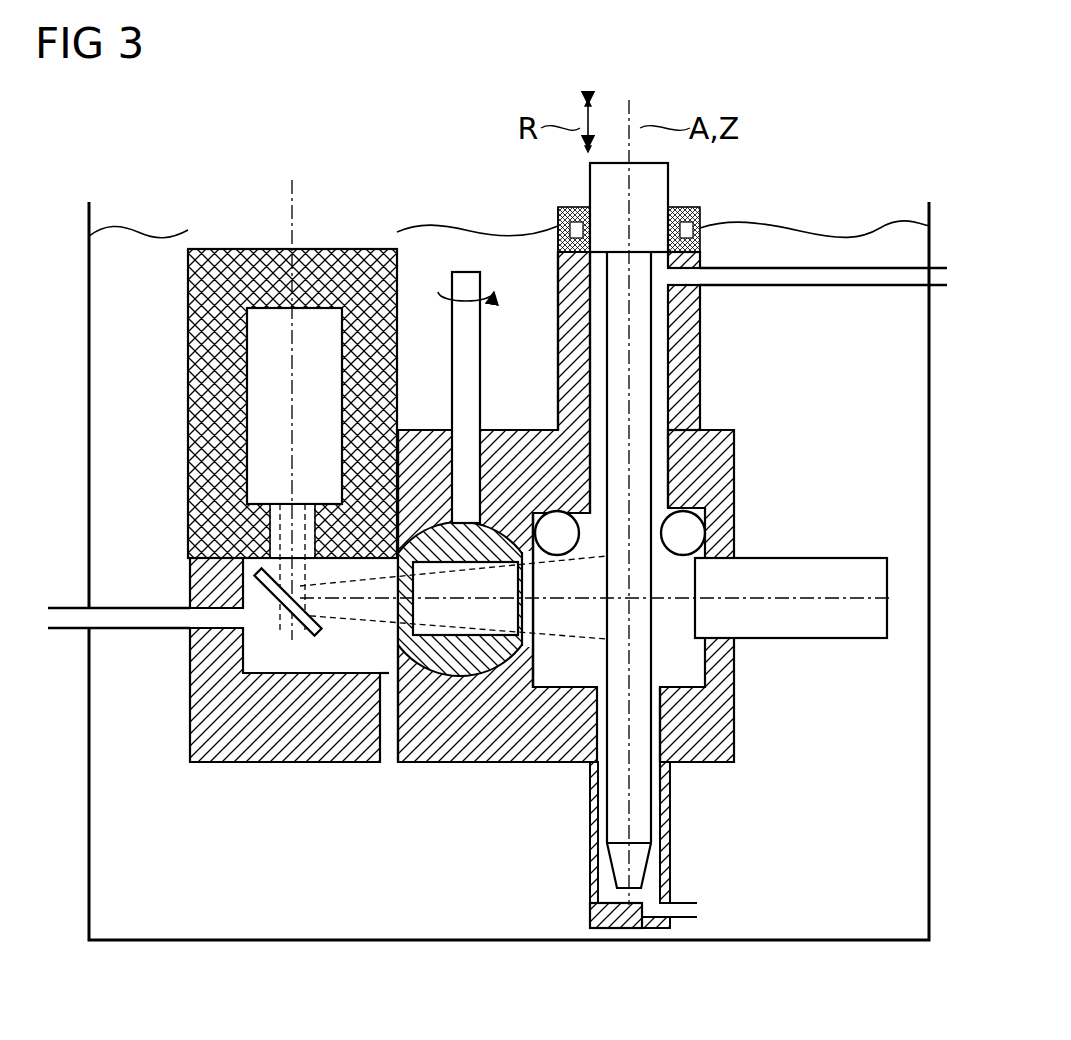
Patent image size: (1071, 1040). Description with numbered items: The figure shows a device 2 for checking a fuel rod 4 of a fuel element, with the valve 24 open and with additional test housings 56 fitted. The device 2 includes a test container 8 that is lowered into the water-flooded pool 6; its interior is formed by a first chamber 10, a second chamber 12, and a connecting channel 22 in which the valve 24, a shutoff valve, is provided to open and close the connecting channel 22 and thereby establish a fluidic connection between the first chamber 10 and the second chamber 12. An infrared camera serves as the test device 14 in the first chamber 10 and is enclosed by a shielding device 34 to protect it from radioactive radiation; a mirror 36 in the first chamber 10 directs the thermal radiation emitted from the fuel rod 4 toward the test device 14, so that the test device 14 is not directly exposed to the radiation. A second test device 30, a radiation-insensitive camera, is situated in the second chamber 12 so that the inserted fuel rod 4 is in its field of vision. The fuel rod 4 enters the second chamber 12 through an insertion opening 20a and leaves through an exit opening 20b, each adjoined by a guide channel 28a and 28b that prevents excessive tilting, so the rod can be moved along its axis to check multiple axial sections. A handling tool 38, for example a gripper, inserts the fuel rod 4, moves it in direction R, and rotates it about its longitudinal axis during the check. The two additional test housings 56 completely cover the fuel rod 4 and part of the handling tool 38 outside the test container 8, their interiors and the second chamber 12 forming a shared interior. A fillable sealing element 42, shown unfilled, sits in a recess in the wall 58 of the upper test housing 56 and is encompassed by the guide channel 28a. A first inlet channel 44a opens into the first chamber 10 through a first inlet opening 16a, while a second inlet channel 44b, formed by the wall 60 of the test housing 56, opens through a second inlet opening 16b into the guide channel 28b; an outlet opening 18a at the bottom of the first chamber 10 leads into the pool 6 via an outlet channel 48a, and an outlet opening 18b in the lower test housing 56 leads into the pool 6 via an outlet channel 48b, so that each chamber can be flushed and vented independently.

The device 2 is at (797, 218).
The fuel rod 4 is at (607, 287).
The water-flooded pool 6 is at (812, 945).
The test container 8 is at (740, 480).
The first chamber 10 is at (291, 662).
The second chamber 12 is at (540, 672).
The test device 14 is at (258, 422).
The first inlet opening 16a is at (243, 618).
The second inlet opening 16b is at (700, 298).
The outlet opening 18a is at (368, 690).
The outlet opening 18b is at (655, 906).
The insertion opening 20a is at (662, 434).
The exit opening 20b is at (662, 708).
The connecting channel 22 is at (468, 662).
The valve 24 is at (433, 468).
The guide channel 28a is at (664, 460).
The guide channel 28b is at (658, 746).
The second test device 30 is at (878, 638).
The shielding device 34 is at (357, 265).
The mirror 36 is at (258, 586).
The handling tool 38 is at (655, 178).
The sealing element 42 is at (572, 207).
The first inlet channel 44a is at (68, 626).
The second inlet channel 44b is at (862, 277).
The outlet channel 48a is at (390, 754).
The outlet channel 48b is at (690, 924).
The additional test housing 56 is at (576, 362).
The wall 58 is at (563, 225).
The wall 60 is at (576, 324).